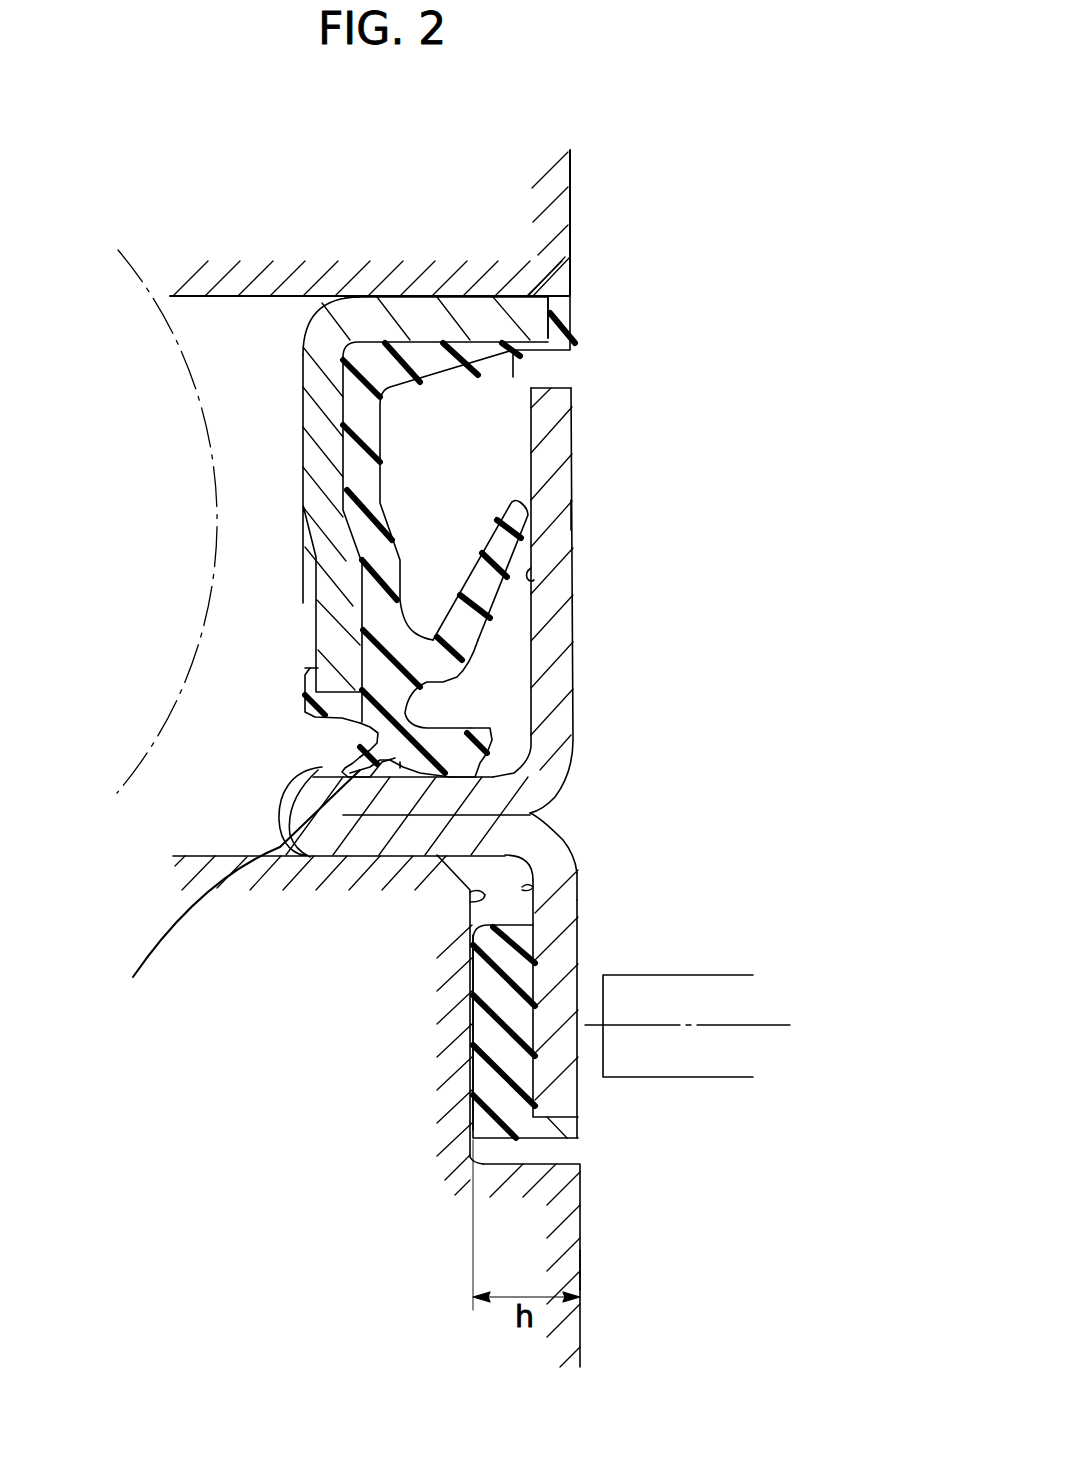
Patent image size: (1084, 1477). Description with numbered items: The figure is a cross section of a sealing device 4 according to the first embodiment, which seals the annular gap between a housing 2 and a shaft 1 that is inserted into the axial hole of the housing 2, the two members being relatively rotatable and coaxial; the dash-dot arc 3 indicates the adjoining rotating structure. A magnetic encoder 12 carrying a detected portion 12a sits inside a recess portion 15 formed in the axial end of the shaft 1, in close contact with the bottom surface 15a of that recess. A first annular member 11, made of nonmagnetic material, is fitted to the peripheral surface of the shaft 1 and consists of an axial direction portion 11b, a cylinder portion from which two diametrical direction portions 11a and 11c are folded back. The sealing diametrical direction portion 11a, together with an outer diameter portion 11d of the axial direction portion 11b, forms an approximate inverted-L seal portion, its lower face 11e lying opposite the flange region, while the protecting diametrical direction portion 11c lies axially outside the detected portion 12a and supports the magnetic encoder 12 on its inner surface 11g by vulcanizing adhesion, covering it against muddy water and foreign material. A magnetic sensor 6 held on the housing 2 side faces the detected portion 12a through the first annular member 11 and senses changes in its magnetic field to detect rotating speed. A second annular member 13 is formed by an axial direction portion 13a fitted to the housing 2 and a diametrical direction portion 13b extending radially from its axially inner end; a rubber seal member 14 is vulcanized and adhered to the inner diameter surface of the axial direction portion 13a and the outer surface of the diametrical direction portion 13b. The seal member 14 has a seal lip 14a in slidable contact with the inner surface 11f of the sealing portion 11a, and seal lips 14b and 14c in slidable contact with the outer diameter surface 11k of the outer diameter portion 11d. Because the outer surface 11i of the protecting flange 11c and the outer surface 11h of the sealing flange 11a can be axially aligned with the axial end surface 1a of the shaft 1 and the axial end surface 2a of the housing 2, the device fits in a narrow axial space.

The shaft 1 is at (583, 1218).
The axial end surface of the shaft 1a is at (583, 1265).
The housing 2 is at (573, 192).
The axial end surface of the housing 2a is at (570, 235).
The bearing / rotating member outline 3 is at (133, 742).
The sealing device 4 is at (302, 333).
The magnetic sensor 6 is at (672, 1055).
The first annular member 11 is at (555, 652).
The diametrical direction portion for sealing 11a is at (555, 448).
The axial direction portion 11b is at (280, 880).
The diametrical direction portion for protecting 11c is at (555, 950).
The outer diameter portion 11d is at (437, 800).
The slinger flange lower surface 11e is at (437, 838).
The inner surface of the sealing diametrical direction portion 11f is at (533, 577).
The inner surface of the protecting diametrical direction portion 11g is at (535, 885).
The outer surface of the sealing flange portion 11h is at (558, 518).
The outer surface of the protecting flange portion 11i is at (580, 910).
The outer diameter surface of the outer diameter portion 11k is at (232, 891).
The magnetic encoder 12 is at (500, 1100).
The detected portion 12a is at (470, 1035).
The second annular member 13 is at (448, 320).
The axial direction portion of the second annular member 13a is at (520, 318).
The diametrical direction portion of the second annular member 13b is at (323, 433).
The seal member 14 is at (370, 546).
The seal lip 14a is at (483, 604).
The seal lip 14b is at (465, 745).
The seal lip 14c is at (365, 762).
The recess portion 15 is at (470, 920).
The bottom surface of the recess portion 15a is at (460, 900).